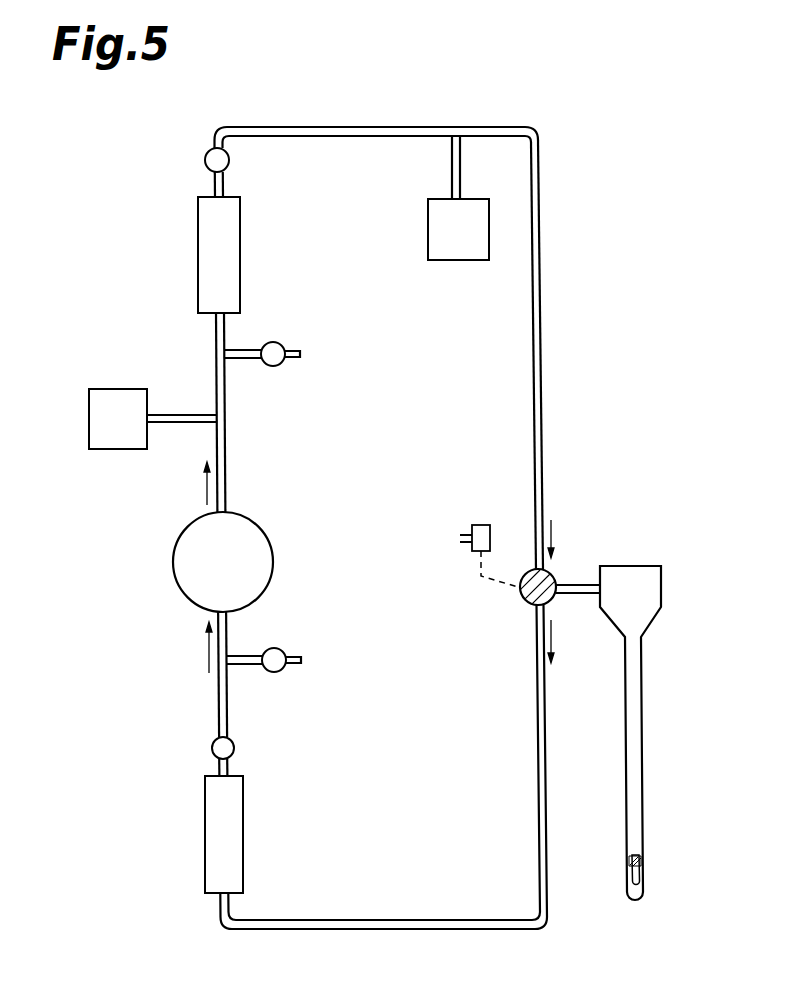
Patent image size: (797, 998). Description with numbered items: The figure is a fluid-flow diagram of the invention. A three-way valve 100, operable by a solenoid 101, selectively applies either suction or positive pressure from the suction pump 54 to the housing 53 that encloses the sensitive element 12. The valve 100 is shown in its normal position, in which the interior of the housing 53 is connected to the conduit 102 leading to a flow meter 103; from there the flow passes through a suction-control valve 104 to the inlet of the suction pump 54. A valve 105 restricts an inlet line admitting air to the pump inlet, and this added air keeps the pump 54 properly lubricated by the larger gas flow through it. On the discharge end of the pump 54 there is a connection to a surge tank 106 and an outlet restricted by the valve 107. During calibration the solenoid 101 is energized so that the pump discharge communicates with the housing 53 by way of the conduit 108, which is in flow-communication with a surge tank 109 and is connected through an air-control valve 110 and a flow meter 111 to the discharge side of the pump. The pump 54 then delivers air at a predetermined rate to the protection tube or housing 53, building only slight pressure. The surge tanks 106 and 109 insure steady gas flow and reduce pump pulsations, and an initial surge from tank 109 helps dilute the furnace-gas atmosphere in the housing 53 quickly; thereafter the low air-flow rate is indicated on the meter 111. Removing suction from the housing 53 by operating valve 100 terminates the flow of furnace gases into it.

The air-control valve 110 is at (206, 157).
The flow meter 111 is at (198, 256).
The valve 107 is at (284, 345).
The surge tank 106 is at (88, 414).
The suction pump 54 is at (173, 565).
The valve 105 is at (280, 670).
The suction-control valve 104 is at (212, 745).
The flow meter 103 is at (205, 836).
The surge tank 109 is at (472, 262).
The conduit 108 is at (542, 409).
The conduit 102 is at (538, 810).
The solenoid 101 is at (470, 527).
The three-way valve 100 is at (523, 602).
The housing 53 is at (642, 760).
The sensitive element 12 is at (641, 876).